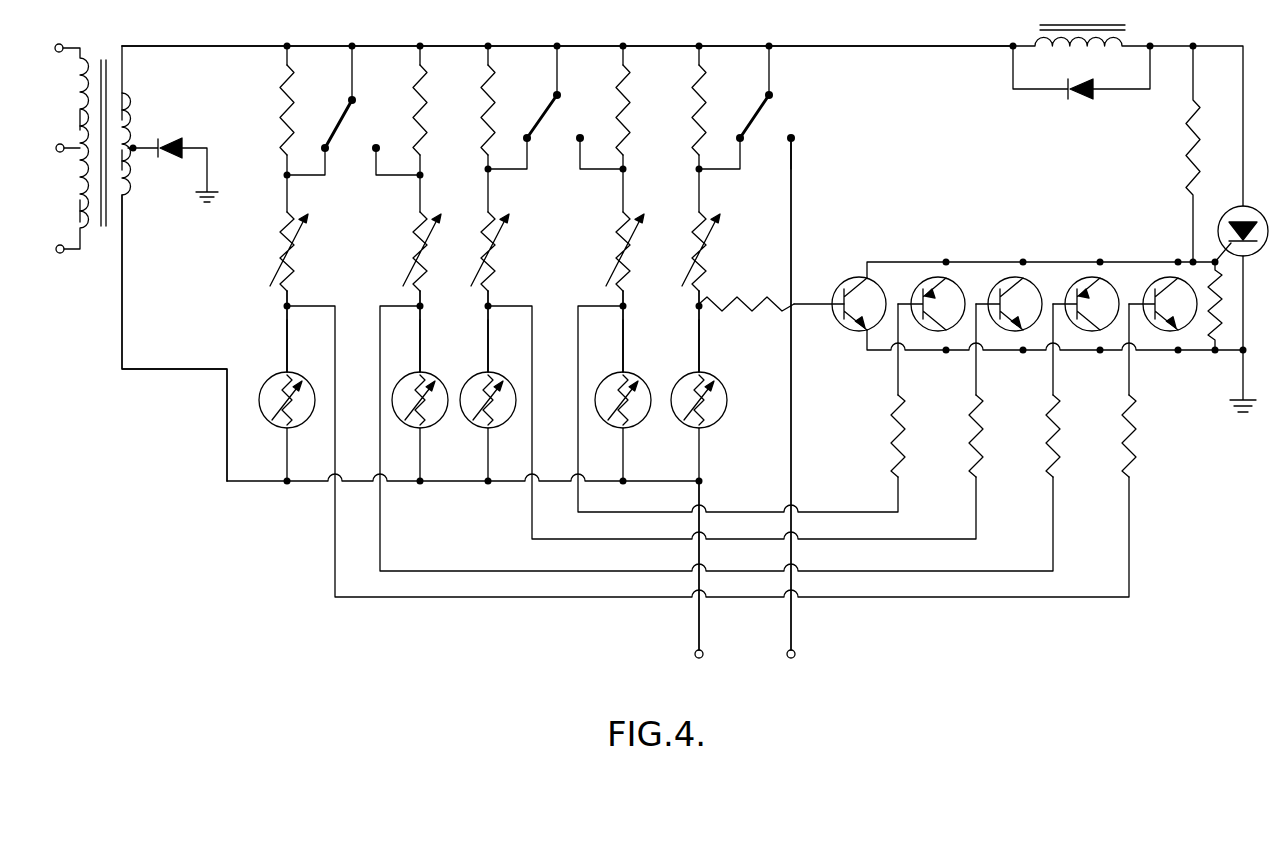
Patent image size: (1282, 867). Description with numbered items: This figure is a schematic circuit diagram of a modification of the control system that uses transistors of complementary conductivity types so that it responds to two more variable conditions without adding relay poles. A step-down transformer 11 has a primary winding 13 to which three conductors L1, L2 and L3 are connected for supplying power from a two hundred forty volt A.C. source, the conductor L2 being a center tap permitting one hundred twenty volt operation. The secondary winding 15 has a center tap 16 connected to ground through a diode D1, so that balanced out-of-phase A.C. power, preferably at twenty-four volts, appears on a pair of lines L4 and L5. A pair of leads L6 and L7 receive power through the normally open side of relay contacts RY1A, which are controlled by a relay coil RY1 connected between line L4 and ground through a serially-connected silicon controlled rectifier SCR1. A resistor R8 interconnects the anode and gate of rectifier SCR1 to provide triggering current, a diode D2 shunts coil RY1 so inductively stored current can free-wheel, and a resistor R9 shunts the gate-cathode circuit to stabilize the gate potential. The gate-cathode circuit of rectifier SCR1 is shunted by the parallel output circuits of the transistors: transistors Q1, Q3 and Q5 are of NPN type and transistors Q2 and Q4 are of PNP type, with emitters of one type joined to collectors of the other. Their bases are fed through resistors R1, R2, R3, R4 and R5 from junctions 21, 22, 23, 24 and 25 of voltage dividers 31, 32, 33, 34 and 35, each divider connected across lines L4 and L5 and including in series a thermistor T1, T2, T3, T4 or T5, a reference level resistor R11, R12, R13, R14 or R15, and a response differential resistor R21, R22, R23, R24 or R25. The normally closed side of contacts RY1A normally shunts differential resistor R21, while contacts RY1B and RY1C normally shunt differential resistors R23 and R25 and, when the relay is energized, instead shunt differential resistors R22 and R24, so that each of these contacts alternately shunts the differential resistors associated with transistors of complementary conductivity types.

The step-down transformer 11 is at (97, 49).
The primary winding 13 is at (80, 123).
The secondary winding 15 is at (130, 116).
The center tap 16 is at (133, 150).
The junction 21 is at (696, 306).
The junction 22 is at (619, 310).
The junction 23 is at (491, 308).
The junction 24 is at (423, 312).
The junction 25 is at (290, 312).
The voltage divider 31 is at (698, 340).
The voltage divider 32 is at (623, 345).
The voltage divider 33 is at (487, 352).
The voltage divider 34 is at (421, 352).
The voltage divider 35 is at (286, 343).
The conductor L1 is at (64, 64).
The conductor L2 is at (64, 166).
The conductor L3 is at (64, 264).
The line L4 is at (188, 46).
The line L5 is at (164, 370).
The lead L6 is at (696, 620).
The lead L7 is at (794, 620).
The diode D1 is at (164, 156).
The diode D2 is at (1072, 99).
The relay coil RY1 is at (1030, 45).
The relay contacts RY1A is at (767, 115).
The relay contacts RY1B is at (543, 128).
The relay contacts RY1C is at (343, 143).
The current-limiting resistor R1 is at (746, 288).
The resistor R2 is at (890, 457).
The current-limiting resistor R3 is at (970, 455).
The resistor R4 is at (1047, 455).
The current-limiting resistor R5 is at (1124, 447).
The resistor R8 is at (1190, 138).
The resistor R9 is at (1210, 335).
The adjustable reference level resistor R11 is at (707, 242).
The reference resistor R12 is at (631, 242).
The adjustable reference level resistor R13 is at (496, 248).
The reference resistor R14 is at (416, 250).
The adjustable reference level resistor R15 is at (282, 249).
The response differential resistor R21 is at (695, 128).
The differential resistor R22 is at (620, 103).
The response differential resistor R23 is at (485, 100).
The differential resistor R24 is at (415, 95).
The response differential resistor R25 is at (283, 97).
The thermistor T1 is at (718, 422).
The thermistor T2 is at (631, 426).
The thermistor T3 is at (480, 426).
The thermistor T4 is at (412, 426).
The thermistor T5 is at (277, 424).
The NPN transistor Q1 is at (863, 277).
The PNP transistor Q2 is at (940, 278).
The NPN transistor Q3 is at (1016, 278).
The PNP transistor Q4 is at (1090, 278).
The NPN transistor Q5 is at (1170, 278).
The silicon controlled rectifier SCR1 is at (1218, 225).